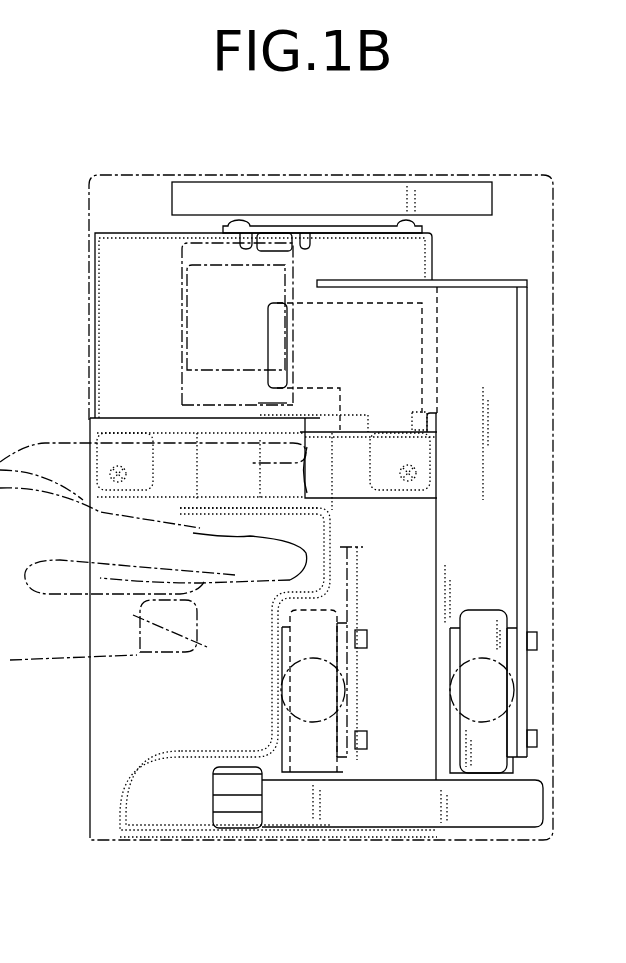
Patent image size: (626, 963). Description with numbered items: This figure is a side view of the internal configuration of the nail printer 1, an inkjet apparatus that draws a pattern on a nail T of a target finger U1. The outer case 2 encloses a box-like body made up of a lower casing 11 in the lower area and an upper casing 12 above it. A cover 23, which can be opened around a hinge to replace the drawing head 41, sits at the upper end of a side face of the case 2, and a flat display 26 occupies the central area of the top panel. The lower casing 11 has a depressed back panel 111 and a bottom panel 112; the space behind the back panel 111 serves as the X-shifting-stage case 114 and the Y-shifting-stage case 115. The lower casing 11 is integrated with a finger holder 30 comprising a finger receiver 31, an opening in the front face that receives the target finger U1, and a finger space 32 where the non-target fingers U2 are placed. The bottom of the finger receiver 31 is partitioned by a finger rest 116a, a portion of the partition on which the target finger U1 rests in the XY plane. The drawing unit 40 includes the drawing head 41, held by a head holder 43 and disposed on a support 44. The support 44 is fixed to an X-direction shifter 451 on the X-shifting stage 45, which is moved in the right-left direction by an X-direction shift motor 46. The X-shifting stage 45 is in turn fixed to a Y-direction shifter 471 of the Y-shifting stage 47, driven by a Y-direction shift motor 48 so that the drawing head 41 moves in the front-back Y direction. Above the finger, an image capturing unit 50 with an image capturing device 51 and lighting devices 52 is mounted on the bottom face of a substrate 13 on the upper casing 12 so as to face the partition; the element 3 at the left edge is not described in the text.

The nail printer 1 is at (424, 144).
The case 2 is at (119, 174).
The sheet 3 is at (41, 423).
The lower casing 11 is at (455, 535).
The upper casing 12 is at (452, 236).
The substrate 13 is at (362, 230).
The cover 23 is at (202, 253).
The display 26 is at (443, 188).
The finger holder 30 is at (123, 665).
The finger receiver 31 is at (88, 438).
The finger space 32 is at (95, 694).
The drawing unit 40 is at (532, 718).
The drawing head 41 is at (423, 347).
The head holder 43 is at (435, 380).
The support 44 is at (518, 533).
The X-shifting stage 45 is at (495, 625).
The X-direction shifter 451 is at (510, 667).
The X-direction shift motor 46 is at (513, 693).
The Y-shifting stage 47 is at (470, 824).
The Y-direction shifter 471 is at (493, 777).
The Y-direction shift motor 48 is at (243, 815).
The image capturing unit 50 is at (278, 191).
The image capturing device 51 is at (279, 242).
The lighting devices 52 is at (243, 242).
The back panel 111 is at (125, 800).
The bottom panel 112 is at (362, 837).
The X-shifting-stage case 114 is at (287, 650).
The Y-shifting-stage case 115 is at (178, 773).
The finger rest 116a is at (237, 497).
The nail T is at (268, 455).
The target finger U1 is at (265, 485).
The non-target fingers U2 is at (197, 553).
The Y direction Y is at (421, 575).